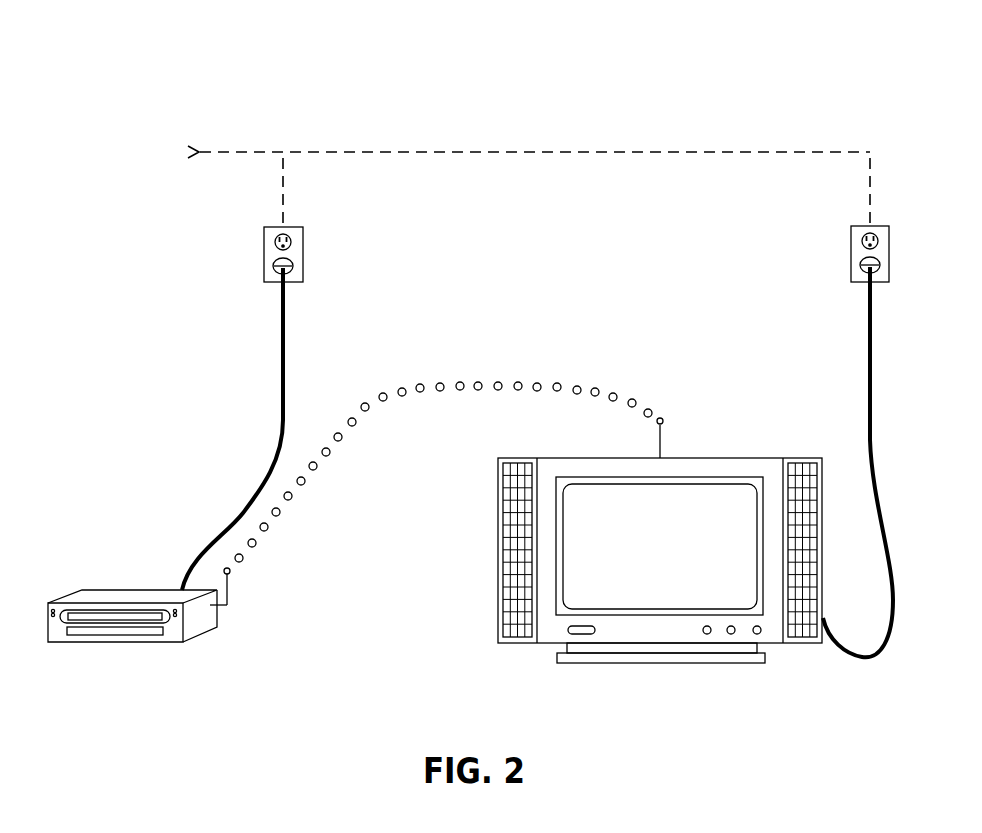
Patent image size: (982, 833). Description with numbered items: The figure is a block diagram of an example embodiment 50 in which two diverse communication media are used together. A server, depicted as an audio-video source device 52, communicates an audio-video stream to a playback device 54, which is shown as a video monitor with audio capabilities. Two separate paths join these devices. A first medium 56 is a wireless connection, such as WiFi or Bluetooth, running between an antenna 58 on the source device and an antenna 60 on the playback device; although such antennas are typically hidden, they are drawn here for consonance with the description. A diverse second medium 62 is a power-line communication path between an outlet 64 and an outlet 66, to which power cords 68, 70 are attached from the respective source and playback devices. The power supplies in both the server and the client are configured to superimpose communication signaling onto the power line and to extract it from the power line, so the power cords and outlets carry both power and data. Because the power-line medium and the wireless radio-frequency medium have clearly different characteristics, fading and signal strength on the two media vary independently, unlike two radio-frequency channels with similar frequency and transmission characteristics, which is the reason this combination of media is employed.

The example embodiment 50 is at (142, 51).
The audio-video source device 52 is at (111, 563).
The playback device 54 is at (483, 643).
The first medium 56 is at (594, 391).
The antenna 58 is at (228, 593).
The antenna 60 is at (661, 440).
The second medium 62 is at (321, 129).
The outlet 64 is at (303, 232).
The outlet 66 is at (852, 252).
The power cord 68 is at (283, 382).
The power cord 70 is at (868, 362).